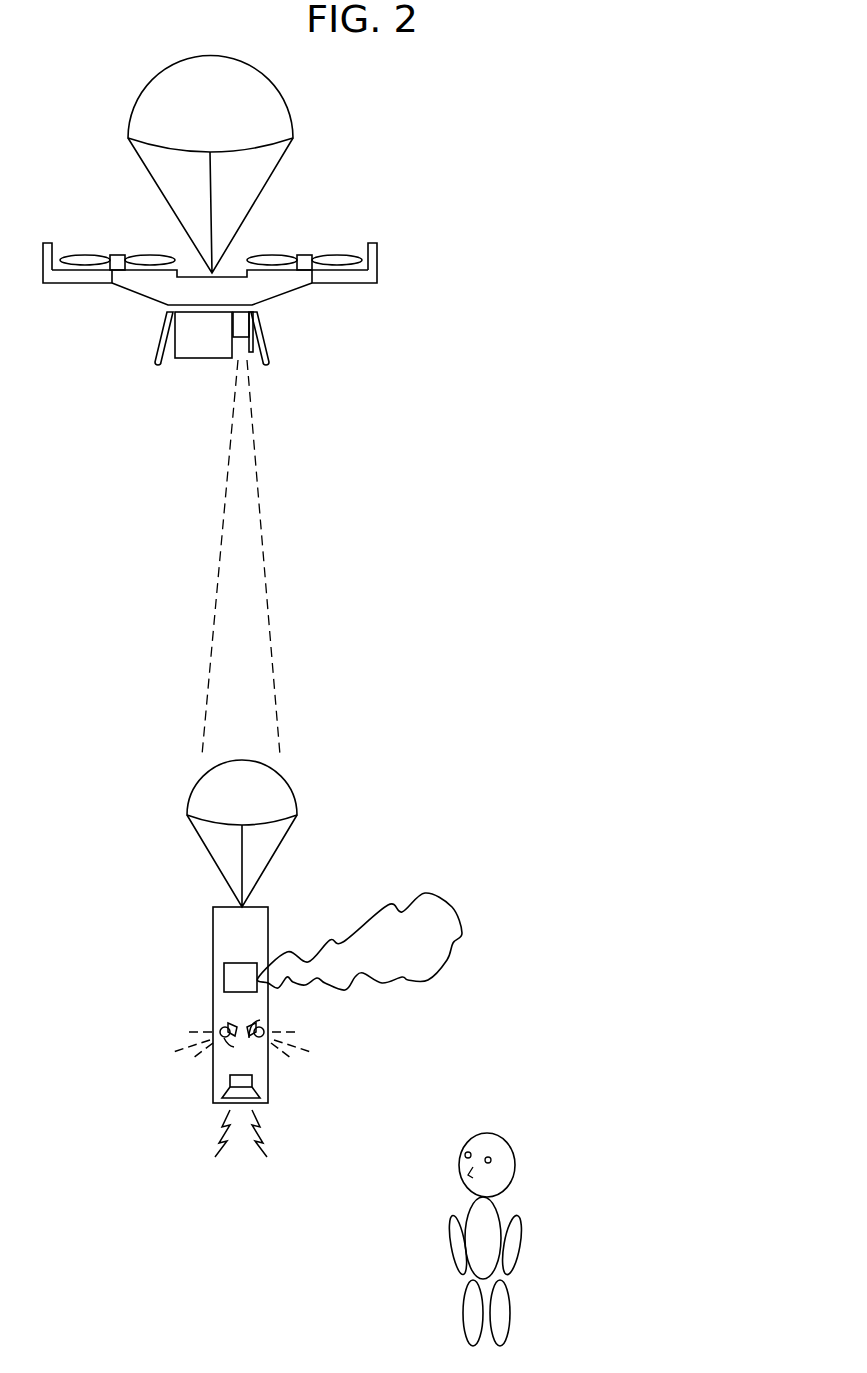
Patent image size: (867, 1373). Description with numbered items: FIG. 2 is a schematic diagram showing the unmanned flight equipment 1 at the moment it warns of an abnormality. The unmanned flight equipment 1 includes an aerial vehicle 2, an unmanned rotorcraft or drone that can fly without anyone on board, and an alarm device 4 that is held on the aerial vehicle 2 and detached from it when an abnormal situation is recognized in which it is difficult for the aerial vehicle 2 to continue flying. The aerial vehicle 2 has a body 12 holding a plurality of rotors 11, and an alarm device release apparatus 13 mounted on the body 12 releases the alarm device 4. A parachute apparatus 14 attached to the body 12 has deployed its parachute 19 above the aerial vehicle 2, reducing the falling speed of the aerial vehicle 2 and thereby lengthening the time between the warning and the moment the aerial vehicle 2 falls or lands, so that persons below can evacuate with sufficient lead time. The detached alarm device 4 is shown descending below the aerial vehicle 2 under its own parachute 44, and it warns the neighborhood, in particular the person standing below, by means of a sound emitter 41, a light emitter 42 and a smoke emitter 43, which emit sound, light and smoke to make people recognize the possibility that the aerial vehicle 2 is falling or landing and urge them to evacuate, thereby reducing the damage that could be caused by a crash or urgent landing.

The unmanned flight equipment 1 is at (469, 131).
The aerial vehicle 2 is at (356, 199).
The alarm device 4 is at (131, 882).
The rotor 11 is at (83, 257).
The body 12 is at (132, 292).
The alarm device release apparatus 13 is at (254, 322).
The parachute apparatus 14 is at (184, 256).
The parachute 19 is at (128, 109).
The sound emitter 41 is at (230, 1084).
The light emitter 42 is at (226, 1022).
The smoke emitter 43 is at (224, 978).
The parachute 44 is at (186, 810).